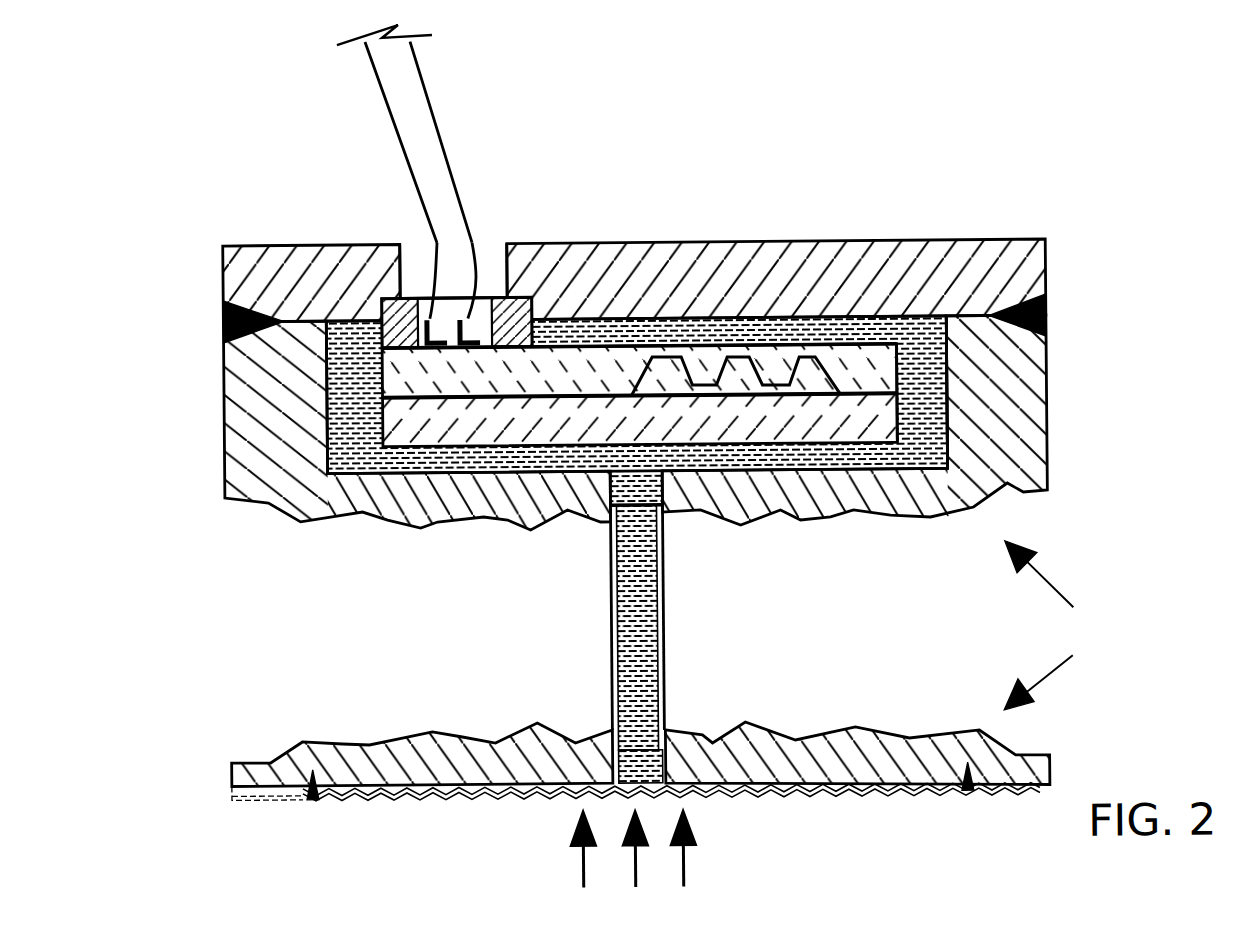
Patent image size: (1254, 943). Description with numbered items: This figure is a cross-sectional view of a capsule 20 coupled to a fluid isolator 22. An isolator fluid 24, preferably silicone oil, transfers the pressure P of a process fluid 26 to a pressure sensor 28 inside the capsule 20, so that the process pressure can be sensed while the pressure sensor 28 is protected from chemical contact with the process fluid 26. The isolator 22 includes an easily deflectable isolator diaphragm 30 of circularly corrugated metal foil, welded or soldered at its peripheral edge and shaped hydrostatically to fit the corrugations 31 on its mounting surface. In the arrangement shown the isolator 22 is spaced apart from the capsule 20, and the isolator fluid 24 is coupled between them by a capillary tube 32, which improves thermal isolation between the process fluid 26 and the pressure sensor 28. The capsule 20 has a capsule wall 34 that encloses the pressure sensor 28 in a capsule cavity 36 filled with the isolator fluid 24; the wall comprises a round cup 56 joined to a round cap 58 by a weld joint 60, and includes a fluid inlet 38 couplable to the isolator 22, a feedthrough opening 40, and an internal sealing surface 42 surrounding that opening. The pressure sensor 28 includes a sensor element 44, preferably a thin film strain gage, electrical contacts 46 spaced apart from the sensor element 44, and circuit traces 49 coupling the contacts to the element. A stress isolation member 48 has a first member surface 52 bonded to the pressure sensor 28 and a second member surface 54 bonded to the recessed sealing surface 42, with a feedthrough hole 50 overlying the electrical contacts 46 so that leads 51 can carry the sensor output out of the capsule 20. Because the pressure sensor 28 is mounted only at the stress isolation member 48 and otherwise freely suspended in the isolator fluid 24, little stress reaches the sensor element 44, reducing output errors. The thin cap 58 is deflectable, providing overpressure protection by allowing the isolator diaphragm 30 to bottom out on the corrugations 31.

The capsule 20 is at (1063, 582).
The fluid isolator 22 is at (1063, 676).
The isolator fluid 24 is at (948, 360).
The process fluid 26 is at (717, 902).
The pressure sensor 28 is at (897, 352).
The isolator diaphragm 30 is at (884, 792).
The corrugations 31 is at (492, 774).
The capillary tube 32 is at (663, 618).
The capsule wall 34 is at (624, 359).
The capsule cavity 36 is at (355, 423).
The fluid inlet 38 is at (606, 487).
The feedthrough opening 40 is at (481, 252).
The sealing surface 42 is at (388, 261).
The sensor element 44 is at (712, 351).
The electrical contacts 46 is at (438, 348).
The stress isolation member 48 is at (389, 311).
The circuit traces 49 is at (606, 344).
The feedthrough hole 50 is at (491, 249).
The leads 51 is at (444, 136).
The first member surface 52 is at (398, 353).
The second member surface 54 is at (531, 249).
The round cup 56 is at (1006, 416).
The round cap 58 is at (832, 277).
The weld joint 60 is at (1048, 296).